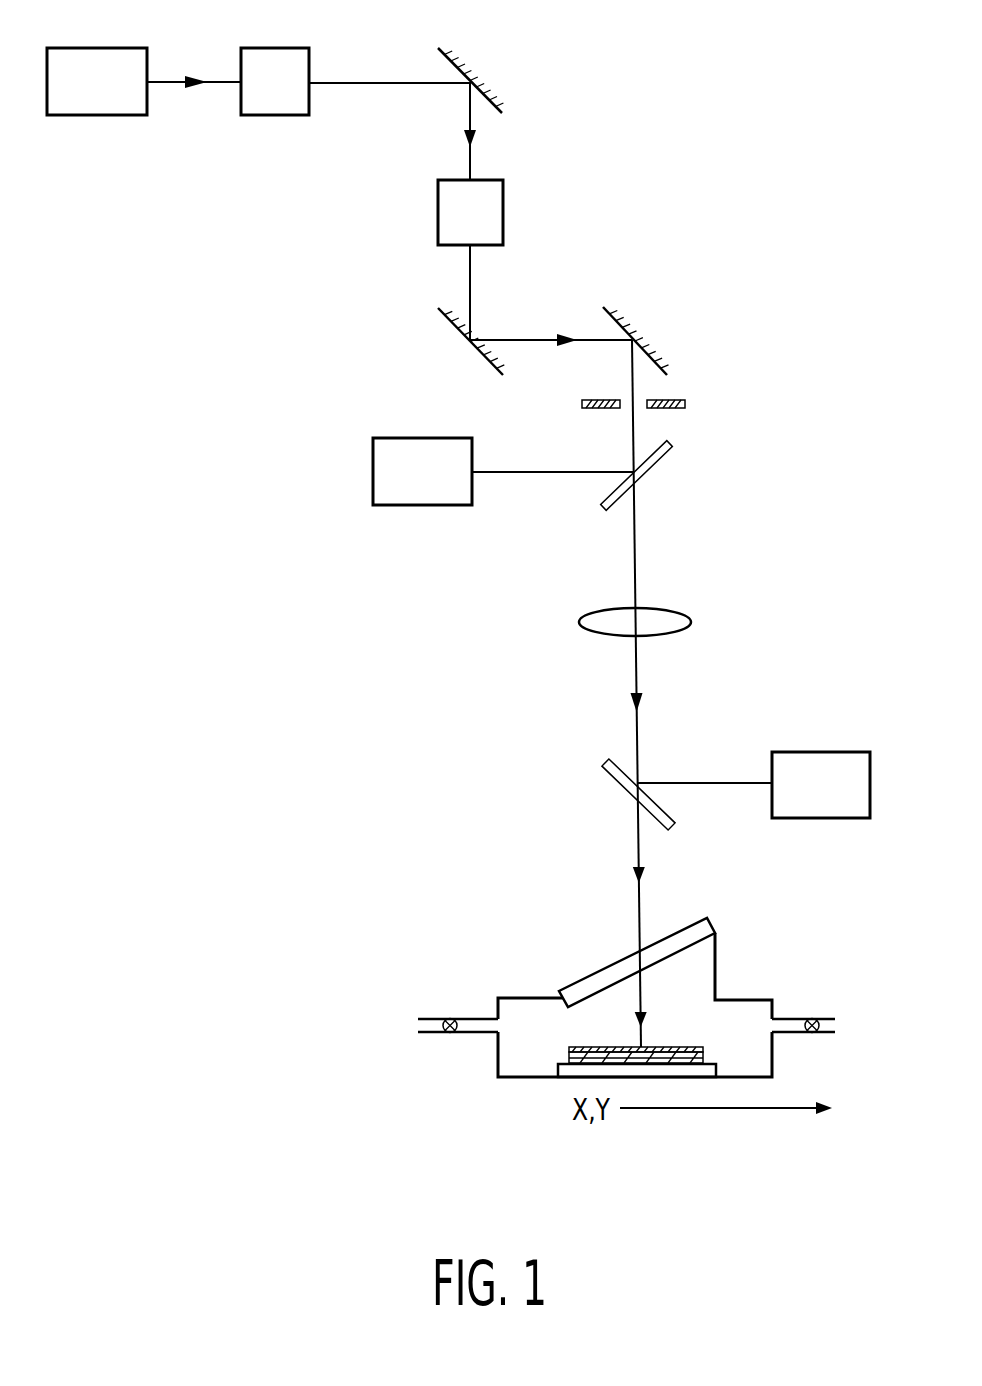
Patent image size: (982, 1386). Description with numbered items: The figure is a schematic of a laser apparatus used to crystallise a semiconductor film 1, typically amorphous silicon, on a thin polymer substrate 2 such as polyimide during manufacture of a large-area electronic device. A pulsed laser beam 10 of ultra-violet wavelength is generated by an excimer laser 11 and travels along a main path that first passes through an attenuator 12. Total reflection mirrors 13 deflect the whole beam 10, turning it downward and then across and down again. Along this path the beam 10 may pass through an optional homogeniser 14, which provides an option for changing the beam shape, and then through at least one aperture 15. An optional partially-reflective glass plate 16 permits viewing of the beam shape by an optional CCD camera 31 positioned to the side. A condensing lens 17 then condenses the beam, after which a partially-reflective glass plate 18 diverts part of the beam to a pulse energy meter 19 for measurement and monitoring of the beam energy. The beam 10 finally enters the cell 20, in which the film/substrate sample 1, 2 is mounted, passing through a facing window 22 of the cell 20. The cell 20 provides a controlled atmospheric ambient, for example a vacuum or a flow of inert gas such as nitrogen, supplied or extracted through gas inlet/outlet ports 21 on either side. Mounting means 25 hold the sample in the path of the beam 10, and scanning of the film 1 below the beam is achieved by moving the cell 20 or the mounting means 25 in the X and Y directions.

The semiconductor film 1 is at (615, 1046).
The polymer substrate 2 is at (569, 1057).
The laser beam 10 is at (212, 80).
The excimer laser 11 is at (93, 57).
The attenuator 12 is at (276, 55).
The total reflection mirrors 13 is at (490, 93).
The homogeniser 14 is at (495, 208).
The aperture 15 is at (682, 410).
The partially-reflective glass plate 16 is at (650, 472).
The condensing lens 17 is at (680, 612).
The partially-reflective glass plate 18 is at (616, 775).
The pulse energy meter 19 is at (833, 760).
The cell 20 is at (716, 975).
The gas inlet/outlet port 21 is at (476, 1017).
The window 22 is at (585, 985).
The mounting means 25 is at (712, 1072).
The CCD camera 31 is at (415, 500).